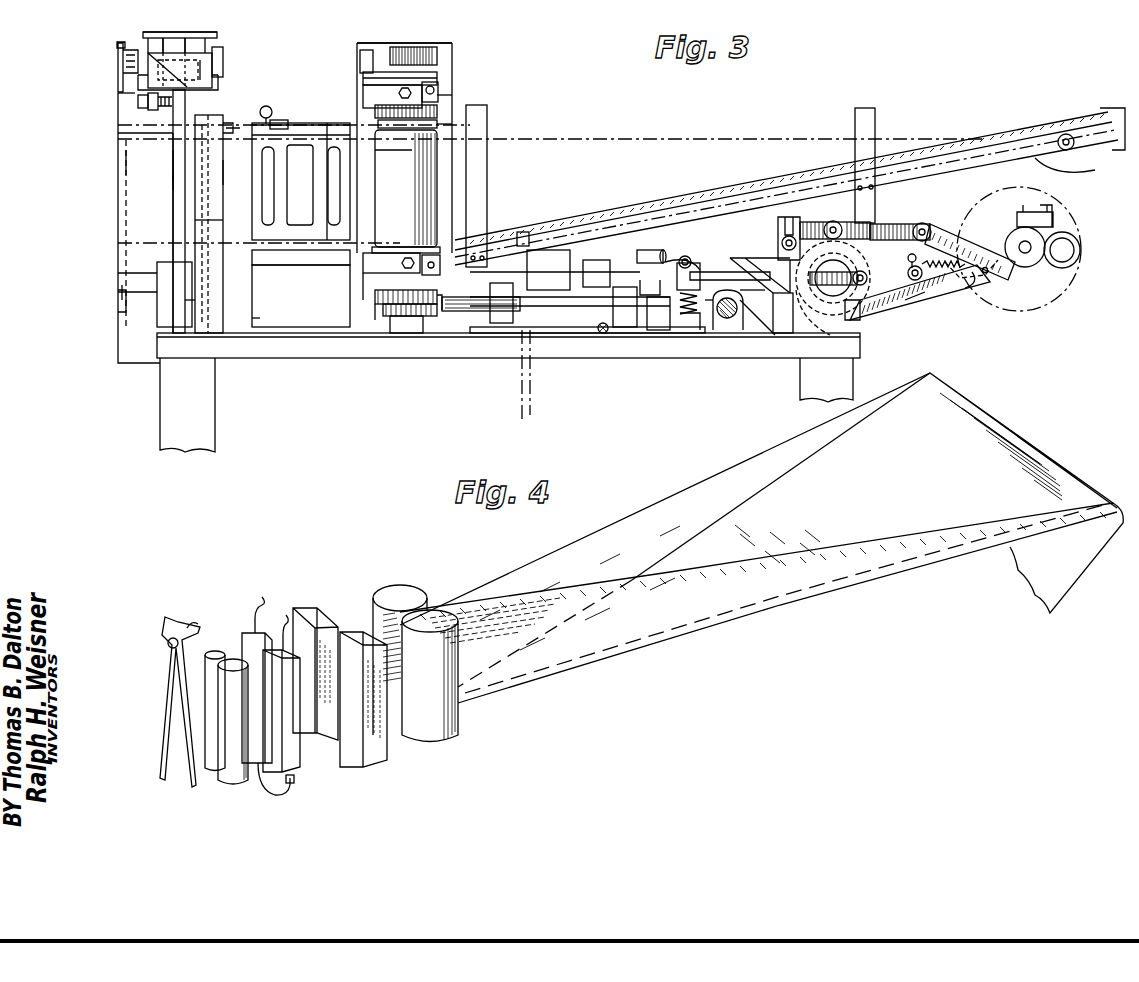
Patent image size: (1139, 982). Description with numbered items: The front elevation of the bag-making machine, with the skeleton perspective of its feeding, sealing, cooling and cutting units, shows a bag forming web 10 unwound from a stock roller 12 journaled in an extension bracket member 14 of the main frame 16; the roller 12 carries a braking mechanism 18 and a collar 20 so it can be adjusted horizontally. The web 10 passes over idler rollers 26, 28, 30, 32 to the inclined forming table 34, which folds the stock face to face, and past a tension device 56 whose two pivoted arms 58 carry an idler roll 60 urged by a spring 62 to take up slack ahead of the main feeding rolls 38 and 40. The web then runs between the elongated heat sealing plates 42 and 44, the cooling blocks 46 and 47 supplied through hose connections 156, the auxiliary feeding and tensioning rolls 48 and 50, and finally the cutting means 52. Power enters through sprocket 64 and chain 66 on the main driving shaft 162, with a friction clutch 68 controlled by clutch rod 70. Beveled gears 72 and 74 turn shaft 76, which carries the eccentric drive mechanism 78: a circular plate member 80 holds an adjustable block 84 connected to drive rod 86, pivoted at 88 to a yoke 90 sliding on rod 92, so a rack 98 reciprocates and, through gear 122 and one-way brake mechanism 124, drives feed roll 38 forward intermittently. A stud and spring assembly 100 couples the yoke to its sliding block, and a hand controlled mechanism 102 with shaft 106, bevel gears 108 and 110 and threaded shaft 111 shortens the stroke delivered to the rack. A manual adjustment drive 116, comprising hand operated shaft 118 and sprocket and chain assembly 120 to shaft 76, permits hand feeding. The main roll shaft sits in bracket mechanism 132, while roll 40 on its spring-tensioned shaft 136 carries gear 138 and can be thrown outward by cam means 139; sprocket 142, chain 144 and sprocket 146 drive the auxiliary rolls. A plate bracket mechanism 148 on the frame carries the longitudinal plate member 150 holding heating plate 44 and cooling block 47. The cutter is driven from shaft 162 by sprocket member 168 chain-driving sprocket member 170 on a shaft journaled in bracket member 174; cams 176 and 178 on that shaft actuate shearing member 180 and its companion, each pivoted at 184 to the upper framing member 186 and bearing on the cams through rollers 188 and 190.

In FIG. 3, the bag forming web 10 is at (1050, 168).
In FIG. 4, the bag forming web 10 is at (672, 500).
In FIG. 3, the roller 12 is at (1070, 222).
In FIG. 3, the extension bracket member 14 is at (878, 306).
In FIG. 3, the main frame 16 is at (722, 344).
In FIG. 3, the braking mechanism 18 is at (1075, 212).
In FIG. 3, the collar 20 is at (1081, 265).
In FIG. 3, the idler roller 26 is at (937, 226).
In FIG. 3, the idler roller 28 is at (846, 172).
In FIG. 3, the idler roller 30 is at (777, 252).
In FIG. 3, the idler roller 32 is at (1068, 134).
In FIG. 3, the inclined forming table 34 is at (996, 128).
In FIG. 4, the inclined forming table 34 is at (960, 452).
In FIG. 4, the feeding roll 38 is at (412, 588).
In FIG. 3, the feeding roll 40 is at (393, 165).
In FIG. 4, the feeding roll 40 is at (436, 614).
In FIG. 4, the heat sealing plate 42 is at (310, 607).
In FIG. 3, the heat sealing plate 44 is at (337, 125).
In FIG. 4, the heat sealing plate 44 is at (355, 632).
In FIG. 4, the cooling block 46 is at (253, 630).
In FIG. 3, the cooling block 47 is at (277, 120).
In FIG. 4, the cooling block 47 is at (281, 648).
In FIG. 4, the auxiliary feeding and tensioning roll 48 is at (211, 650).
In FIG. 3, the auxiliary feeding and tensioning roll 50 is at (219, 172).
In FIG. 4, the auxiliary feeding and tensioning roll 50 is at (233, 660).
In FIG. 3, the cutting means 52 is at (170, 184).
In FIG. 4, the cutting means 52 is at (160, 609).
In FIG. 3, the tension device 56 is at (940, 273).
In FIG. 3, the screw 58 is at (908, 258).
In FIG. 3, the idler roll 60 is at (912, 299).
In FIG. 3, the spring 62 is at (956, 270).
In FIG. 3, the sprocket 64 is at (521, 230).
In FIG. 3, the chain 66 is at (531, 380).
In FIG. 3, the friction clutch 68 is at (550, 250).
In FIG. 3, the clutch rod 70 is at (603, 334).
In FIG. 3, the beveled gear 72 is at (838, 262).
In FIG. 3, the beveled gear 74 is at (845, 358).
In FIG. 3, the shaft 76 is at (852, 282).
In FIG. 3, the eccentric drive mechanism 78 is at (856, 303).
In FIG. 3, the circular plate member 80 is at (856, 254).
In FIG. 3, the block 84 is at (873, 263).
In FIG. 3, the drive rod 86 is at (690, 290).
In FIG. 3, the pivot connection 88 is at (642, 285).
In FIG. 3, the yoke 90 is at (597, 270).
In FIG. 3, the rod 92 is at (452, 312).
In FIG. 3, the rack 98 is at (433, 318).
In FIG. 3, the stud and spring assembly 100 is at (492, 250).
In FIG. 3, the hand controlled mechanism 102 is at (694, 240).
In FIG. 3, the shaft 106 is at (650, 250).
In FIG. 3, the bevel gear 108 is at (684, 243).
In FIG. 3, the bevel gear 110 is at (700, 246).
In FIG. 3, the threaded shaft 111 is at (685, 316).
In FIG. 3, the manual adjustment drive 116 is at (728, 322).
In FIG. 3, the hand operated shaft 118 is at (735, 322).
In FIG. 3, the sprocket and chain assembly 120 is at (724, 323).
In FIG. 3, the gear 122 is at (371, 326).
In FIG. 3, the brake mechanism 124 is at (367, 310).
In FIG. 3, the bracket mechanism 132 is at (452, 50).
In FIG. 3, the shaft 136 is at (438, 78).
In FIG. 3, the gear 138 is at (440, 105).
In FIG. 3, the cam means 139 is at (354, 60).
In FIG. 3, the sprocket 142 is at (222, 124).
In FIG. 3, the chain 144 is at (300, 126).
In FIG. 3, the sprocket 146 is at (440, 124).
In FIG. 3, the plate bracket mechanism 148 is at (247, 322).
In FIG. 3, the elongated plate member 150 is at (248, 226).
In FIG. 3, the hose connections 156 is at (272, 110).
In FIG. 4, the hose connections 156 is at (292, 790).
In FIG. 3, the main driving shaft 162 is at (728, 242).
In FIG. 3, the sprocket member 168 is at (117, 43).
In FIG. 3, the sprocket member 170 is at (118, 305).
In FIG. 3, the bracket member 174 is at (218, 44).
In FIG. 3, the cam 176 is at (188, 42).
In FIG. 3, the cam 178 is at (166, 44).
In FIG. 3, the shearing member 180 is at (180, 163).
In FIG. 3, the pivot 184 is at (136, 99).
In FIG. 3, the upper framing member 186 is at (197, 311).
In FIG. 3, the roller 188 is at (214, 60).
In FIG. 3, the roller 190 is at (118, 88).